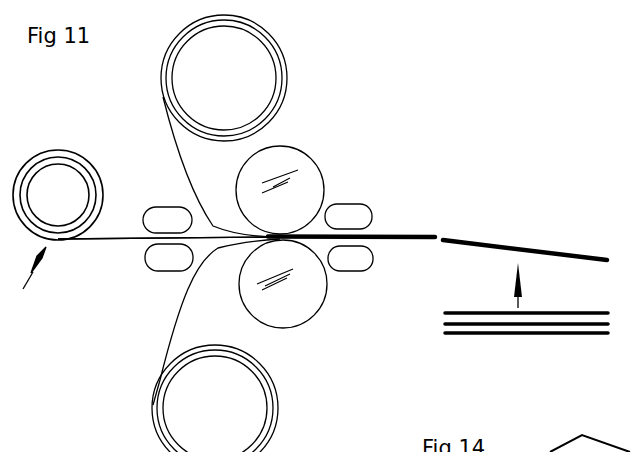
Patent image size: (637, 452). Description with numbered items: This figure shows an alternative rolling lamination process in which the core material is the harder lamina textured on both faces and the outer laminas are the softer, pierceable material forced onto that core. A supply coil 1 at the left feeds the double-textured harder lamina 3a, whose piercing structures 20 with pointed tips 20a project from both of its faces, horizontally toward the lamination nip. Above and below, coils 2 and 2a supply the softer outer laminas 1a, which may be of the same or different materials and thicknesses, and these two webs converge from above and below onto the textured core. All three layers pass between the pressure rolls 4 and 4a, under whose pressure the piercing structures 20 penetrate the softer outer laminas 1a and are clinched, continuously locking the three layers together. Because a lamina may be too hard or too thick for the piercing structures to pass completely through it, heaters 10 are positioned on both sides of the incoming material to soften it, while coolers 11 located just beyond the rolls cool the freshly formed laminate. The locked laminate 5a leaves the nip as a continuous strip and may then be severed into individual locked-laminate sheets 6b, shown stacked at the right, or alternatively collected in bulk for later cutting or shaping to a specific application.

The coil 1 is at (58, 195).
The first lamina 1a is at (172, 128).
The coil 2 is at (224, 78).
The coil 2a is at (215, 398).
The textured face 3a is at (34, 278).
The pressure roll 4 is at (280, 190).
The pressure roll 4a is at (283, 284).
The laminated web 5a is at (413, 243).
The cut sheets 6b is at (573, 254).
The heaters 10 is at (168, 239).
The coolers 11 is at (349, 237).
The piercing structures 20 is at (119, 236).
The pointed tips 20a is at (109, 244).